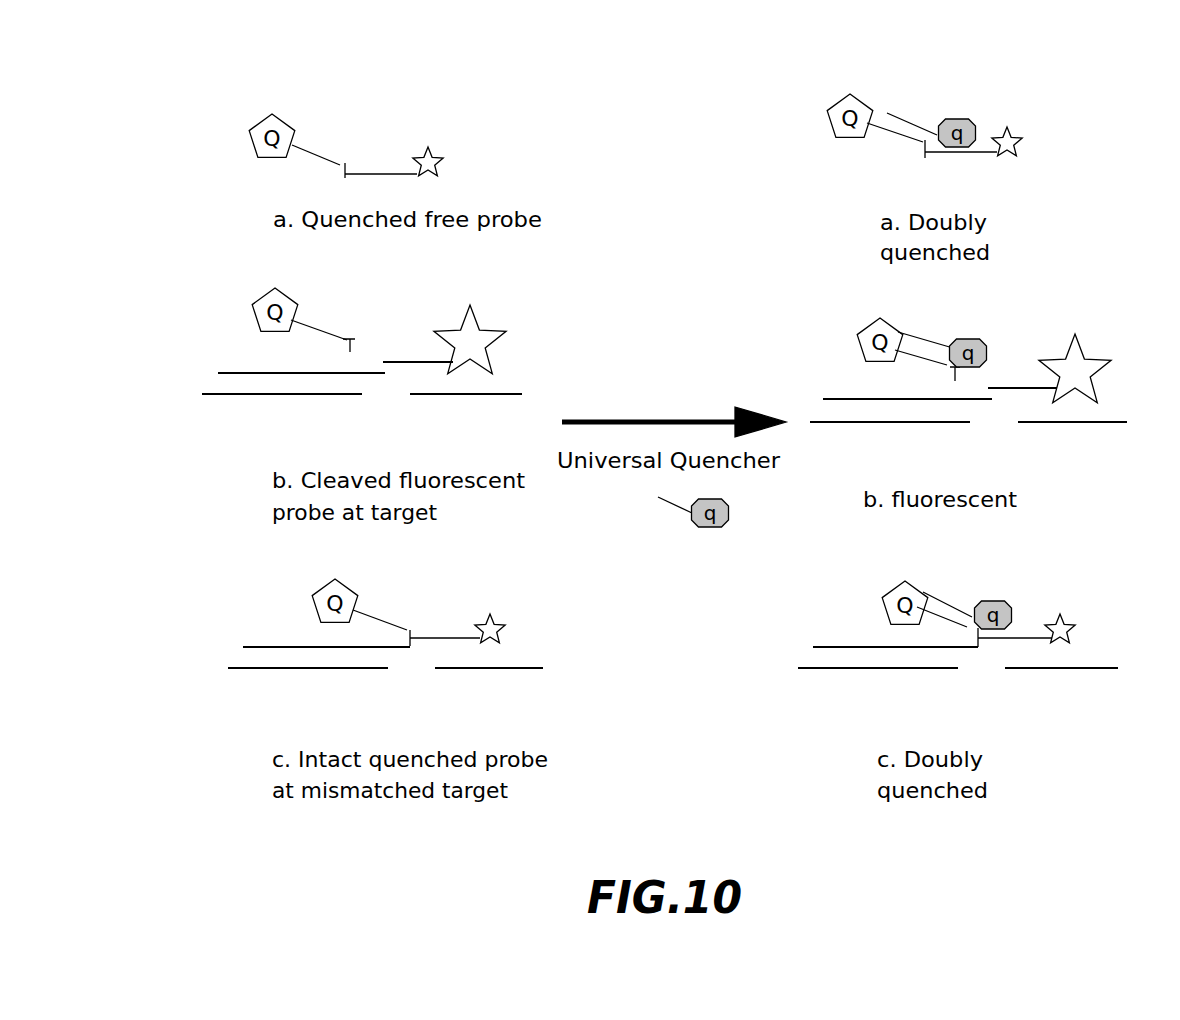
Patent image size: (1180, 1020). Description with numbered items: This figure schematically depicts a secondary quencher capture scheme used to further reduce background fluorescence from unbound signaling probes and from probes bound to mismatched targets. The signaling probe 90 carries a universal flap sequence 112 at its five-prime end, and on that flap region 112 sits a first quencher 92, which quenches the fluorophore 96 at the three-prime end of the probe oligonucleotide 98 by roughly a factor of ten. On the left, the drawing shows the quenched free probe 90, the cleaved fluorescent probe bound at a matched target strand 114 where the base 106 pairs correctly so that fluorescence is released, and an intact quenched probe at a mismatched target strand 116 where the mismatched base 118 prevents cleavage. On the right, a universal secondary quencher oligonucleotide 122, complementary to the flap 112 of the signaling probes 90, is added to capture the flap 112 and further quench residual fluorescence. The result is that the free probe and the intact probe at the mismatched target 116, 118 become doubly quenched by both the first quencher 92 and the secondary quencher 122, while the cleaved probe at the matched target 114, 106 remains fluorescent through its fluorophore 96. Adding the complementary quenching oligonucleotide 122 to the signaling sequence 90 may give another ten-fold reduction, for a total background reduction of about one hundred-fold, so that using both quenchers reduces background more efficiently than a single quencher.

The signaling probe 90 is at (346, 124).
The first quencher 92 is at (265, 122).
The fluorophore 96 is at (433, 158).
The probe oligonucleotide 98 is at (377, 170).
The matched target base 106 is at (392, 407).
The universal flap sequence 112 is at (312, 152).
The target nucleic acid 114 is at (262, 397).
The mismatched target nucleic acid 116 is at (288, 672).
The mismatched target base 118 is at (417, 682).
The universal secondary quencher oligonucleotide 122 is at (705, 527).